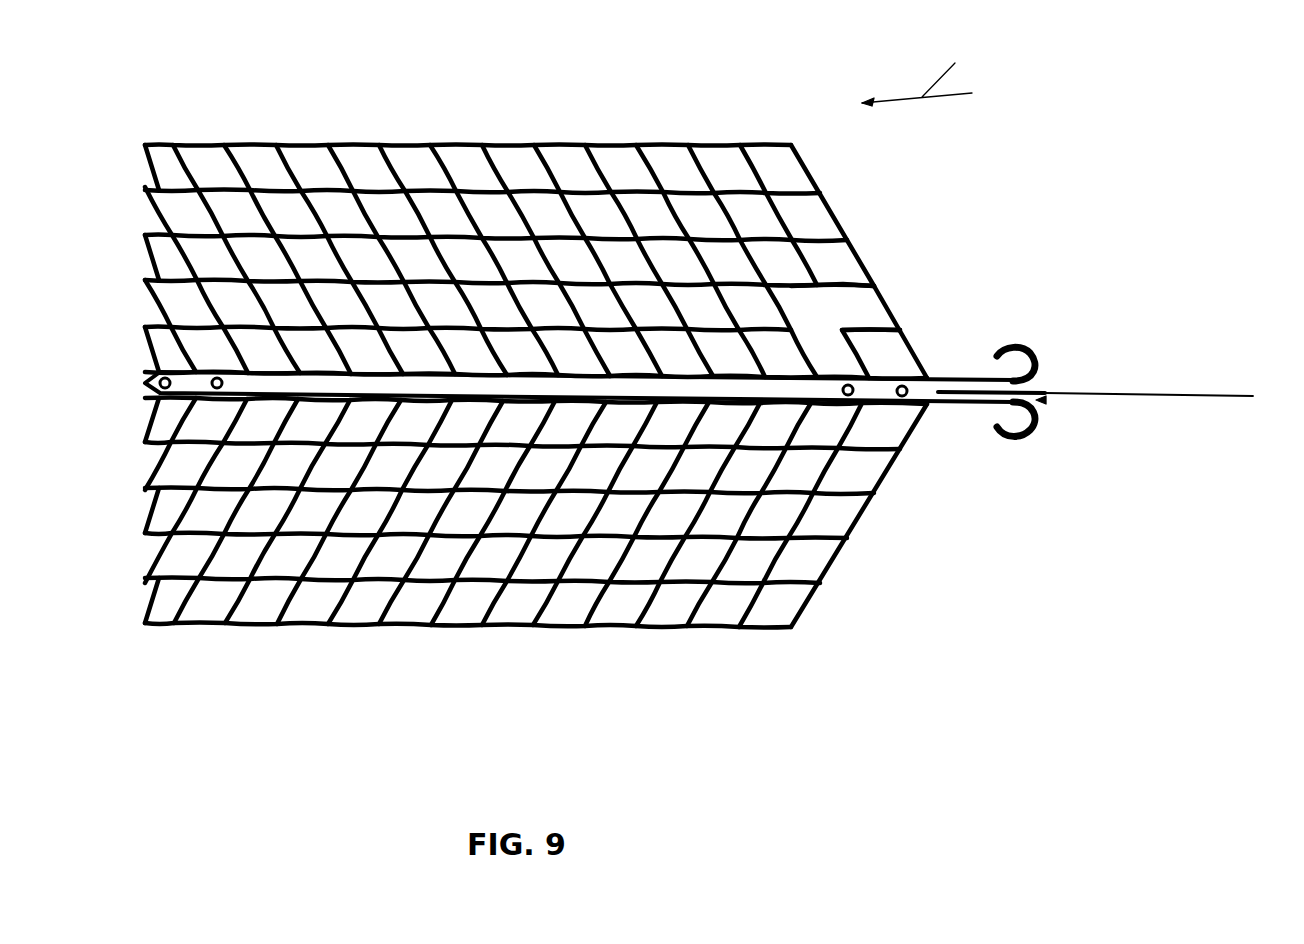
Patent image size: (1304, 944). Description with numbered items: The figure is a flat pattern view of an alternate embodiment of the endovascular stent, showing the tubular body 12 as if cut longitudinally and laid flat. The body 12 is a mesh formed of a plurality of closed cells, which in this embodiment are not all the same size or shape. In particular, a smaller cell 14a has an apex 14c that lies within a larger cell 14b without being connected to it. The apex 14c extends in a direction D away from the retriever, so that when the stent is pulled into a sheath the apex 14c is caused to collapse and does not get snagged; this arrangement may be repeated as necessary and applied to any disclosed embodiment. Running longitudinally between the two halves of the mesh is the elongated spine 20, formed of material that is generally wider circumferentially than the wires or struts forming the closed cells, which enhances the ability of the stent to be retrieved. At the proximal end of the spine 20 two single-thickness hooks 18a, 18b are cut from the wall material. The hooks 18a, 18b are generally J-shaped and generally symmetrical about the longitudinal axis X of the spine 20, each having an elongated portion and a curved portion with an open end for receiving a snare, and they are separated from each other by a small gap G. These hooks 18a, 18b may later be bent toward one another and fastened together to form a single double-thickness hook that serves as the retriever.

The body 12 is at (833, 203).
The smaller cell 14a is at (900, 352).
The larger cell 14b is at (838, 298).
The apex 14c is at (848, 330).
The hook 18a is at (1027, 435).
The hook 18b is at (1000, 345).
The spine 20 is at (805, 390).
The direction D is at (927, 73).
The gap G is at (1046, 401).
The longitudinal axis X is at (1158, 393).